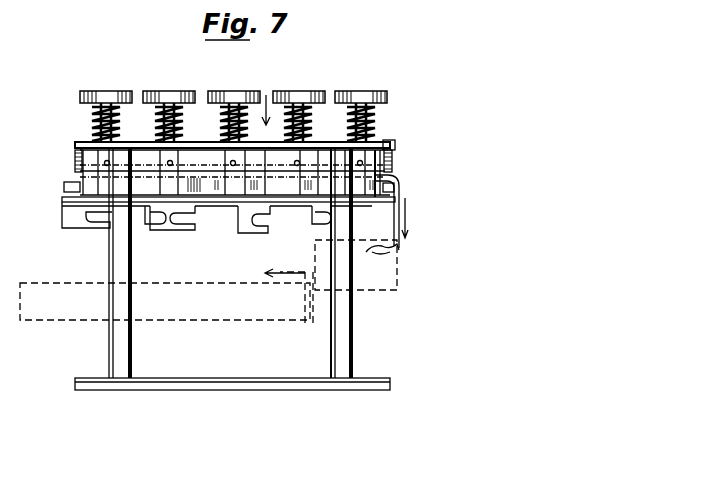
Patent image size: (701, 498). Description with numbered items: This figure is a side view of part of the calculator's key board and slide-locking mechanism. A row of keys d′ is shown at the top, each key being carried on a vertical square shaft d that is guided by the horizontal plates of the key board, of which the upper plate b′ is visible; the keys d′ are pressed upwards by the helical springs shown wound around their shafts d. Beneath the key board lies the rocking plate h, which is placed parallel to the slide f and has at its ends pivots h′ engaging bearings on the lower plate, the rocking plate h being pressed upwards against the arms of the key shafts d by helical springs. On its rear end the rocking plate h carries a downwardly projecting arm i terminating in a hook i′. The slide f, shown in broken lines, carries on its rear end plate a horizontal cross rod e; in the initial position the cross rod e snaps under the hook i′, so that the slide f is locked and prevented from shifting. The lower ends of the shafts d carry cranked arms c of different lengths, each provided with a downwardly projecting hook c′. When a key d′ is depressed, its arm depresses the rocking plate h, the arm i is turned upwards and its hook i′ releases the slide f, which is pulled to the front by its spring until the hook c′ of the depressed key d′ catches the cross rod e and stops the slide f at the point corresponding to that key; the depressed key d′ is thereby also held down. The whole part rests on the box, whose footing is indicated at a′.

The base plate a′ is at (200, 378).
The keys d′ is at (170, 98).
The square shafts d is at (183, 140).
The rocking plate h is at (228, 177).
The upper plate b′ is at (393, 146).
The pivots h′ is at (64, 186).
The arm i is at (392, 211).
The cross rod e is at (400, 249).
The hook i′ is at (381, 265).
The hooks c′ is at (72, 226).
The cranked arms c is at (206, 214).
The slides f is at (208, 282).